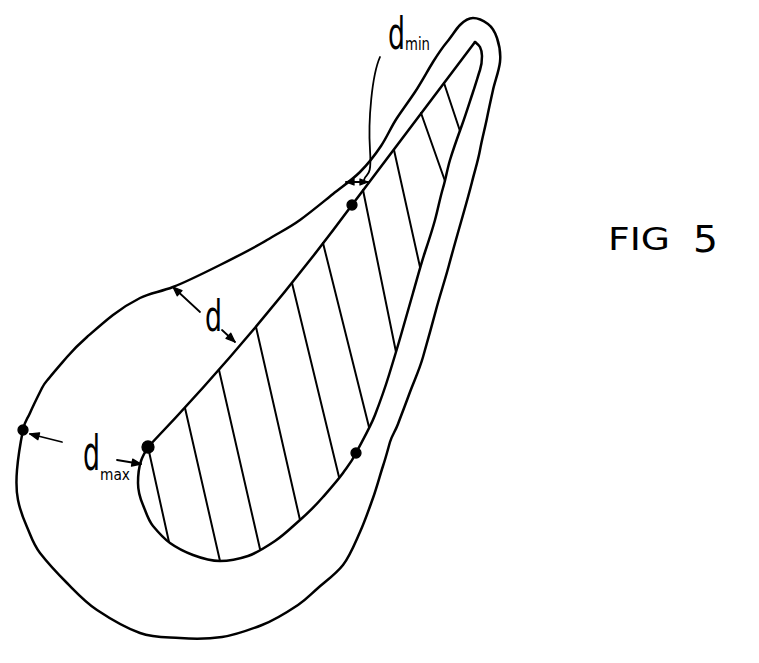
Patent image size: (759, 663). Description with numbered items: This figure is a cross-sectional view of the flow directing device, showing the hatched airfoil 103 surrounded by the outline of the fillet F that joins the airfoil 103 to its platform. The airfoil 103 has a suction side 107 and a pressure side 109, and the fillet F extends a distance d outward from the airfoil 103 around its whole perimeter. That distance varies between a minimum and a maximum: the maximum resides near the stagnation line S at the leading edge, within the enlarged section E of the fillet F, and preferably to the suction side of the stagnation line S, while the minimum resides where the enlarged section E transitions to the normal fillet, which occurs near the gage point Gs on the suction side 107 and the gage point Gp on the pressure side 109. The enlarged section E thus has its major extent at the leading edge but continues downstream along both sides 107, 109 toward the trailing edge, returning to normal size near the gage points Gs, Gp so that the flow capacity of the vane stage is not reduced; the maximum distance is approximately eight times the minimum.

The airfoil 103 is at (343, 301).
The suction side 107 is at (410, 310).
The pressure side 109 is at (267, 307).
The enlarged section E is at (280, 333).
The fillet F is at (461, 170).
The gage point on the pressure side Gp is at (350, 202).
The gage point on the suction side Gs is at (358, 455).
The stagnation line S is at (152, 450).